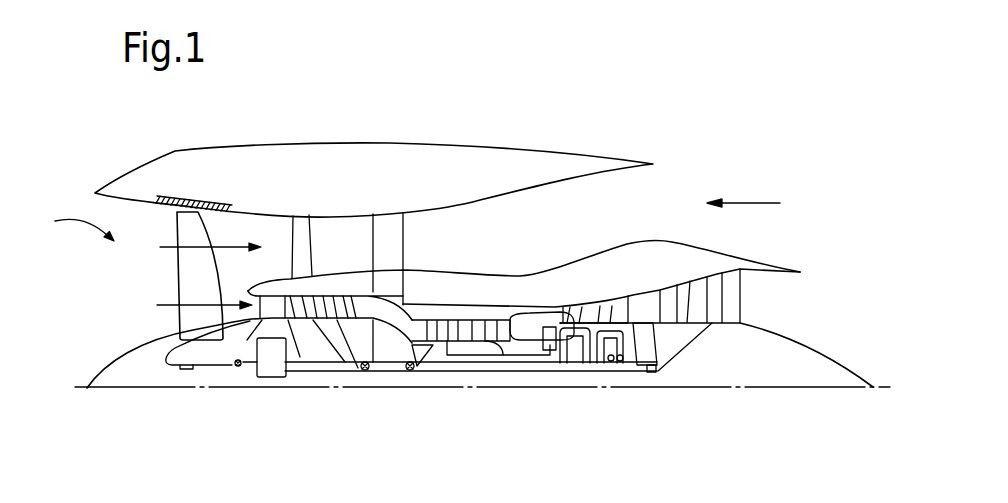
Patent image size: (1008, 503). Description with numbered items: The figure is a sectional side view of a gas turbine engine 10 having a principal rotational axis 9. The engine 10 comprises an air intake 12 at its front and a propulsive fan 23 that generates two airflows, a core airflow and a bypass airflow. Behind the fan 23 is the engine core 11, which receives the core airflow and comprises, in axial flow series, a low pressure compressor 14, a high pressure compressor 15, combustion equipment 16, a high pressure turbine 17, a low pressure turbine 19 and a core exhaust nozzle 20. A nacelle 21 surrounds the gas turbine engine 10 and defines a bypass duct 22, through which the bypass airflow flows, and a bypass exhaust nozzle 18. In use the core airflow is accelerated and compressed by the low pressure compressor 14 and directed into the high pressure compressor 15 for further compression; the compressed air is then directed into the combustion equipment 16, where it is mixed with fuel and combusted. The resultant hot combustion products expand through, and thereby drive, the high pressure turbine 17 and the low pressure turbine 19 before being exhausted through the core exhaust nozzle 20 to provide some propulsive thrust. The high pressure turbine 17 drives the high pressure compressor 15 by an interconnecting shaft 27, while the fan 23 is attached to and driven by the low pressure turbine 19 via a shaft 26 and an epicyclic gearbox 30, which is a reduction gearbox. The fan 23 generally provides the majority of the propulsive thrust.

The principal rotational axis 9 is at (710, 387).
The gas turbine engine 10 is at (162, 157).
The core 11 is at (520, 290).
The air intake 12 is at (71, 226).
The low pressure compressor 14 is at (333, 298).
The high pressure compressor 15 is at (463, 327).
The combustion equipment 16 is at (541, 328).
The high pressure turbine 17 is at (590, 317).
The bypass exhaust nozzle 18 is at (764, 205).
The low pressure turbine 19 is at (715, 287).
The core exhaust nozzle 20 is at (780, 305).
The nacelle 21 is at (395, 158).
The bypass duct 22 is at (632, 213).
The propulsive fan 23 is at (177, 277).
The shaft 26 is at (463, 375).
The interconnecting shaft 27 is at (497, 365).
The epicyclic gearbox 30 is at (270, 358).